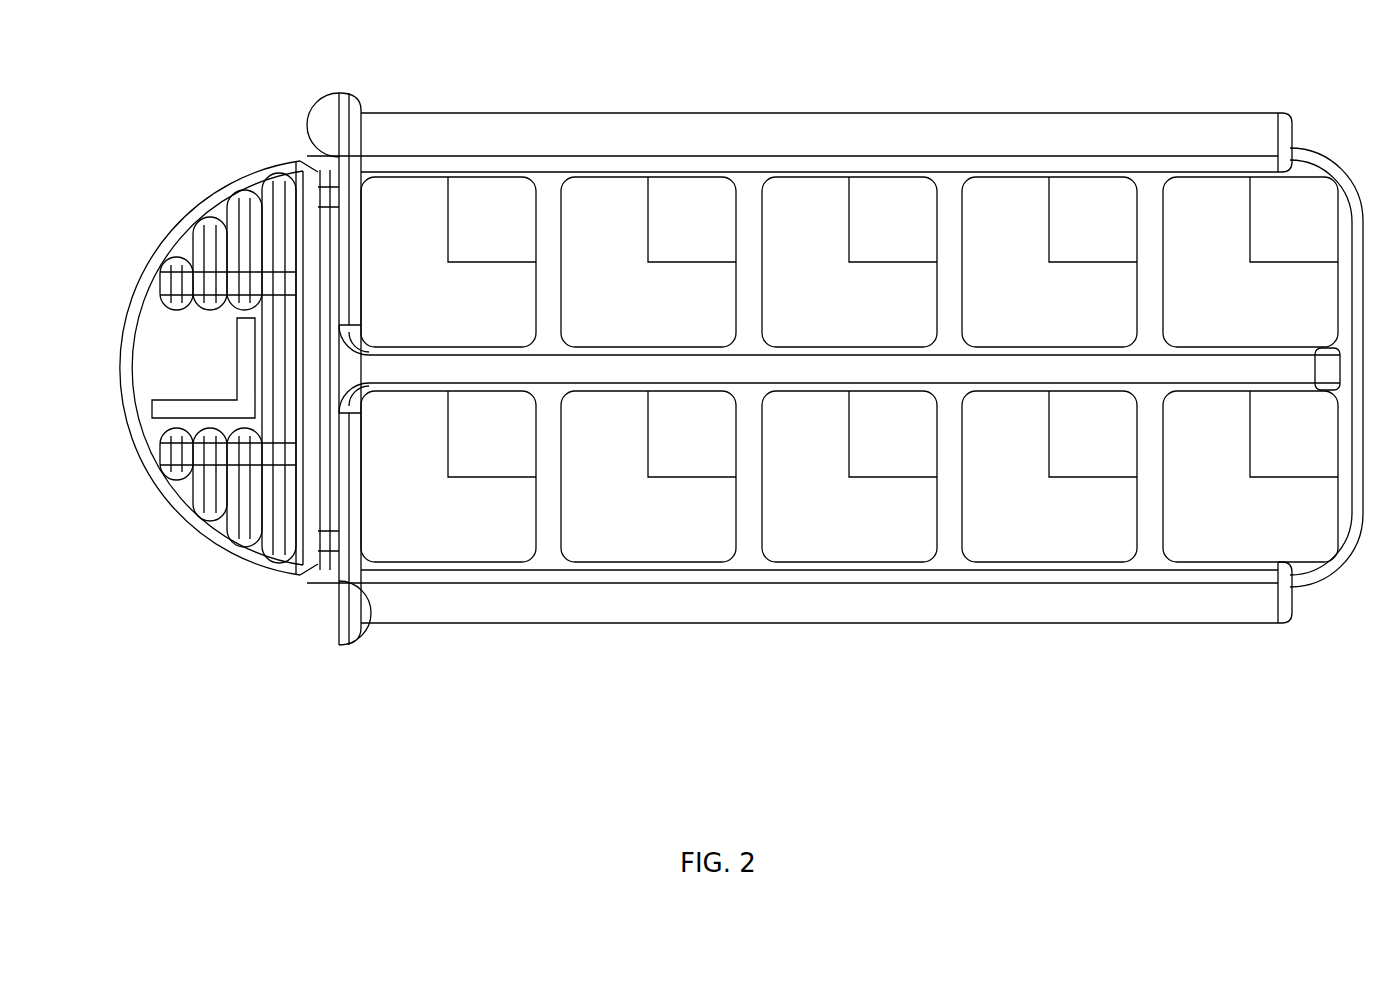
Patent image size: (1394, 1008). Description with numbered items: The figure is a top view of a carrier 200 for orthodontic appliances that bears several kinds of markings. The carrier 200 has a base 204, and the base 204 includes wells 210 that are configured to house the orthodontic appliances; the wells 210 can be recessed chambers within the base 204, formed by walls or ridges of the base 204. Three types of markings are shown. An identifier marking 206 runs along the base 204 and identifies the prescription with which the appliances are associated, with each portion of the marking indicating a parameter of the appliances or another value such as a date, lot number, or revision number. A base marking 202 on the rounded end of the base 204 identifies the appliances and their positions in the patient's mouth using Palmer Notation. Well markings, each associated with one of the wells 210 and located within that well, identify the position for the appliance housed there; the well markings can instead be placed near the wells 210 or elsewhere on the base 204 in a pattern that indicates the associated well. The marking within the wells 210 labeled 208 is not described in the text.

The carrier 200 is at (190, 68).
The base marking 202 is at (118, 366).
The base 204 is at (420, 624).
The identifier marking 206 is at (1015, 350).
The upper cell 208 is at (505, 264).
The wells 210 is at (482, 480).